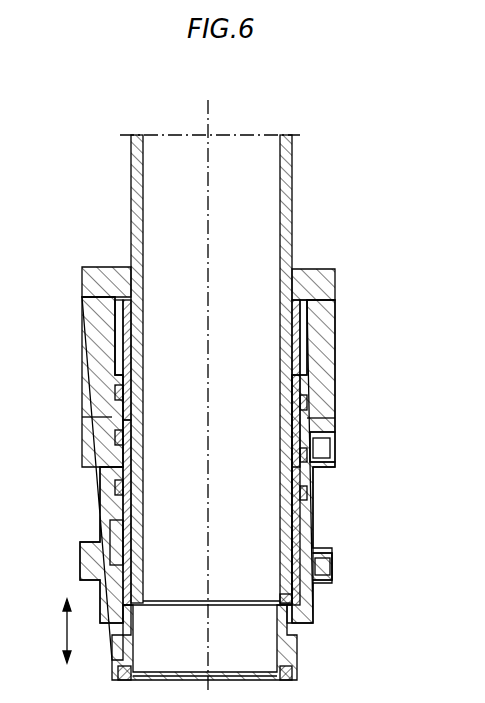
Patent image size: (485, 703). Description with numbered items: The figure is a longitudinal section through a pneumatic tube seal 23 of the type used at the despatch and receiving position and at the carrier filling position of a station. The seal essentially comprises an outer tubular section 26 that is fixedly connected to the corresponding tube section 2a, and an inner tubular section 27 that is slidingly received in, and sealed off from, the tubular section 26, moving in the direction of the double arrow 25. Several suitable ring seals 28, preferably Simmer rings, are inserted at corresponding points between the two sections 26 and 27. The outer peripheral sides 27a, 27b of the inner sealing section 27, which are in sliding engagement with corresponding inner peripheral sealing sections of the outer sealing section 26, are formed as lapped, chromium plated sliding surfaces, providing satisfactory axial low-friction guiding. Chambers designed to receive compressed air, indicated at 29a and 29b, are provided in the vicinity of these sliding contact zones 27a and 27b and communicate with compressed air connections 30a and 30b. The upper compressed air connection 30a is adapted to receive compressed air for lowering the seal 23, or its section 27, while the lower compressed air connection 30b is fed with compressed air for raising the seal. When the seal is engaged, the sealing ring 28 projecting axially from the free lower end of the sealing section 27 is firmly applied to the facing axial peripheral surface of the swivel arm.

The tube section 2a is at (292, 195).
The pneumatic tube seal 23 is at (225, 473).
The double arrow 25 is at (65, 632).
The tubular section 26 is at (212, 463).
The inner tubular section 27 is at (298, 660).
The outer peripheral side 27a is at (125, 342).
The outer peripheral side 27b is at (118, 528).
The ring seal 28 is at (300, 493).
The chamber 29a is at (118, 327).
The chamber 29b is at (115, 547).
The compressed air connection 30a is at (332, 450).
The compressed air connection 30b is at (325, 570).